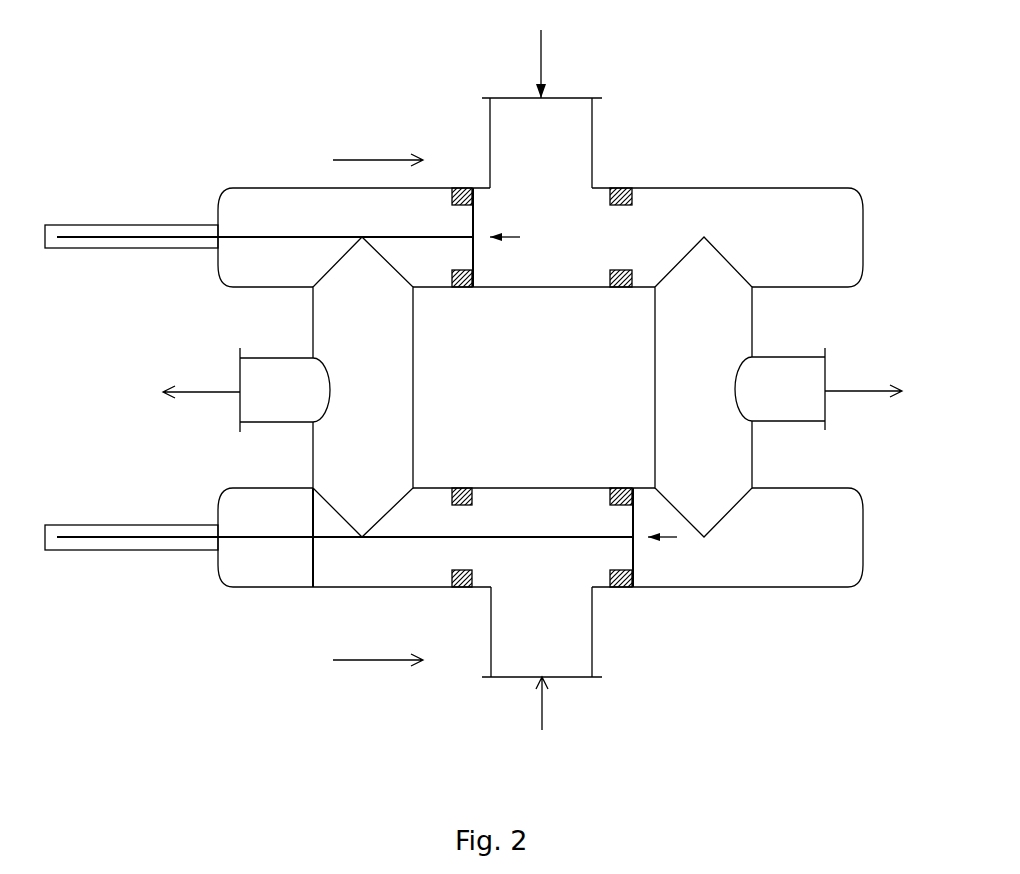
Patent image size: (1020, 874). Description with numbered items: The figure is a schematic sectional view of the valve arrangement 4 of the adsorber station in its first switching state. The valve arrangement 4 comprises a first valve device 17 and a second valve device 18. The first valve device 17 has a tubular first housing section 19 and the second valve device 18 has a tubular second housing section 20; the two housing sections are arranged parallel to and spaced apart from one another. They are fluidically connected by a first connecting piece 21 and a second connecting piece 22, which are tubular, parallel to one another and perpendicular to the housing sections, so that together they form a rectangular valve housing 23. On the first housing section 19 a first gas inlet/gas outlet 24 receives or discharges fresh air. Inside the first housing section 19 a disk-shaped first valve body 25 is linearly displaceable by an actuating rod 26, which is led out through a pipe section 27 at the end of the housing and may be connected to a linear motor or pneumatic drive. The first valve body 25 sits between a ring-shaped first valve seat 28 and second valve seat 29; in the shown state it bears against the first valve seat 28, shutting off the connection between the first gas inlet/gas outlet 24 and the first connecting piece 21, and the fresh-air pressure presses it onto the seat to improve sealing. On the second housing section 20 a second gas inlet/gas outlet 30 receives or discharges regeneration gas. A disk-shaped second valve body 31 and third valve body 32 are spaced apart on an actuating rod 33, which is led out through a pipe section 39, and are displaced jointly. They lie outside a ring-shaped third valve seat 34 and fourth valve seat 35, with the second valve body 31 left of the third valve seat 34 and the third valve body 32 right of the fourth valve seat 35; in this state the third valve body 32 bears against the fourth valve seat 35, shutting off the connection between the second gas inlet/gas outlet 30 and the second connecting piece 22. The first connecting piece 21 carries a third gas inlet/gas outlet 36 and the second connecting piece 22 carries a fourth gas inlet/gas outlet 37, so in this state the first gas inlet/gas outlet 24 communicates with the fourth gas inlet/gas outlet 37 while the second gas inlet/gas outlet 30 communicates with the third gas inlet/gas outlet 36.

The valve arrangement 4 is at (378, 84).
The first valve device 17 is at (262, 180).
The second valve device 18 is at (298, 598).
The first housing section 19 is at (338, 190).
The second housing section 20 is at (343, 585).
The first connecting piece 21 is at (413, 377).
The second connecting piece 22 is at (655, 402).
The valve housing 23 is at (765, 328).
The first gas inlet/gas outlet 24 is at (508, 97).
The first valve body 25 is at (473, 257).
The actuating rod 26 is at (260, 242).
The pipe section 27 is at (183, 223).
The first valve seat 28 is at (476, 193).
The second valve seat 29 is at (605, 196).
The second gas inlet/gas outlet 30 is at (500, 680).
The second valve body 31 is at (310, 510).
The third valve body 32 is at (636, 588).
The actuating rod 33 is at (598, 538).
The third valve seat 34 is at (474, 580).
The fourth valve seat 35 is at (622, 490).
The third gas inlet/gas outlet 36 is at (240, 405).
The fourth gas inlet/gas outlet 37 is at (828, 405).
The pipe section 39 is at (165, 525).